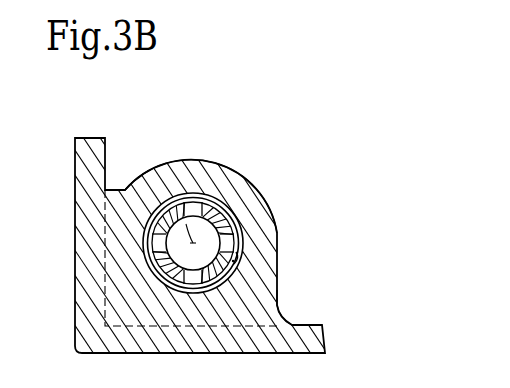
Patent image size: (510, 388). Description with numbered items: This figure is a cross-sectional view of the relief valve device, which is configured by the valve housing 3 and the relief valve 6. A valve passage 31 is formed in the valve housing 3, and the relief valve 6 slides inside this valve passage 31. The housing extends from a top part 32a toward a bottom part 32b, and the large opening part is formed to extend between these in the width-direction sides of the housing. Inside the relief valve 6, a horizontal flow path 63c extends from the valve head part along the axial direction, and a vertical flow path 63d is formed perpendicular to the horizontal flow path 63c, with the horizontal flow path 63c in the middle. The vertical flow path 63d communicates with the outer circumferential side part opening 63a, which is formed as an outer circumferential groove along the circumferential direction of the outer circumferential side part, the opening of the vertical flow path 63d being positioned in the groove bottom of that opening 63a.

The valve housing 3 is at (277, 234).
The relief valve 6 is at (215, 199).
The valve passage 31 is at (234, 257).
The top part 32a is at (195, 161).
The bottom part 32b is at (283, 307).
The outer circumferential side part opening 63a is at (220, 207).
The horizontal flow path 63c is at (134, 189).
The vertical flow path 63d is at (197, 207).